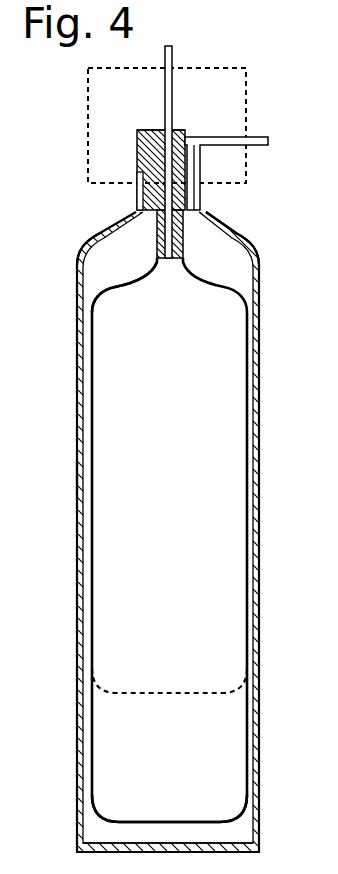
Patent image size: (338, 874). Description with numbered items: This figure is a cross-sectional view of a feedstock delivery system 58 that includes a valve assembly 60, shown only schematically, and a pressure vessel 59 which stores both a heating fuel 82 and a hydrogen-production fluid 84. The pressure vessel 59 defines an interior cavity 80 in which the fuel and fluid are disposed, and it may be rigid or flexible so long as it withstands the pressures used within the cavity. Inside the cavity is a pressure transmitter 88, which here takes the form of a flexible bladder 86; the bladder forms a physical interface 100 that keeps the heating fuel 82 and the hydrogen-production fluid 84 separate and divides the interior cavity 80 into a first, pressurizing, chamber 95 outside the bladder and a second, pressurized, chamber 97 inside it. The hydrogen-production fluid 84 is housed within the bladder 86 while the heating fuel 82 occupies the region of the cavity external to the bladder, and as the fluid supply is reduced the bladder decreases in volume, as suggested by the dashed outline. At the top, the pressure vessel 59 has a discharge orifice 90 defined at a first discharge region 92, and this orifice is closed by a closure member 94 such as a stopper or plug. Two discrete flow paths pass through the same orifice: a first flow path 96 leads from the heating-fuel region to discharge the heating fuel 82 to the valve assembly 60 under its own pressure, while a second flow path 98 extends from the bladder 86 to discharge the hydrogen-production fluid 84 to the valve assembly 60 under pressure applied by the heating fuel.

The feedstock delivery system 58 is at (42, 233).
The pressure vessel 59 is at (75, 478).
The valve assembly 60 is at (86, 107).
The interior cavity 80 is at (235, 258).
The heating fuel 82 is at (102, 823).
The hydrogen-production fluid 84 is at (108, 438).
The bladder 86 is at (100, 288).
The pressure transmitter 88 is at (113, 281).
The discharge orifice 90 is at (147, 188).
The first discharge region 92 is at (118, 154).
The closure member 94 is at (147, 126).
The first chamber 95 is at (104, 834).
The first flow path 96 is at (257, 145).
The second chamber 97 is at (169, 627).
The second flow path 98 is at (173, 77).
The interface 100 is at (244, 819).